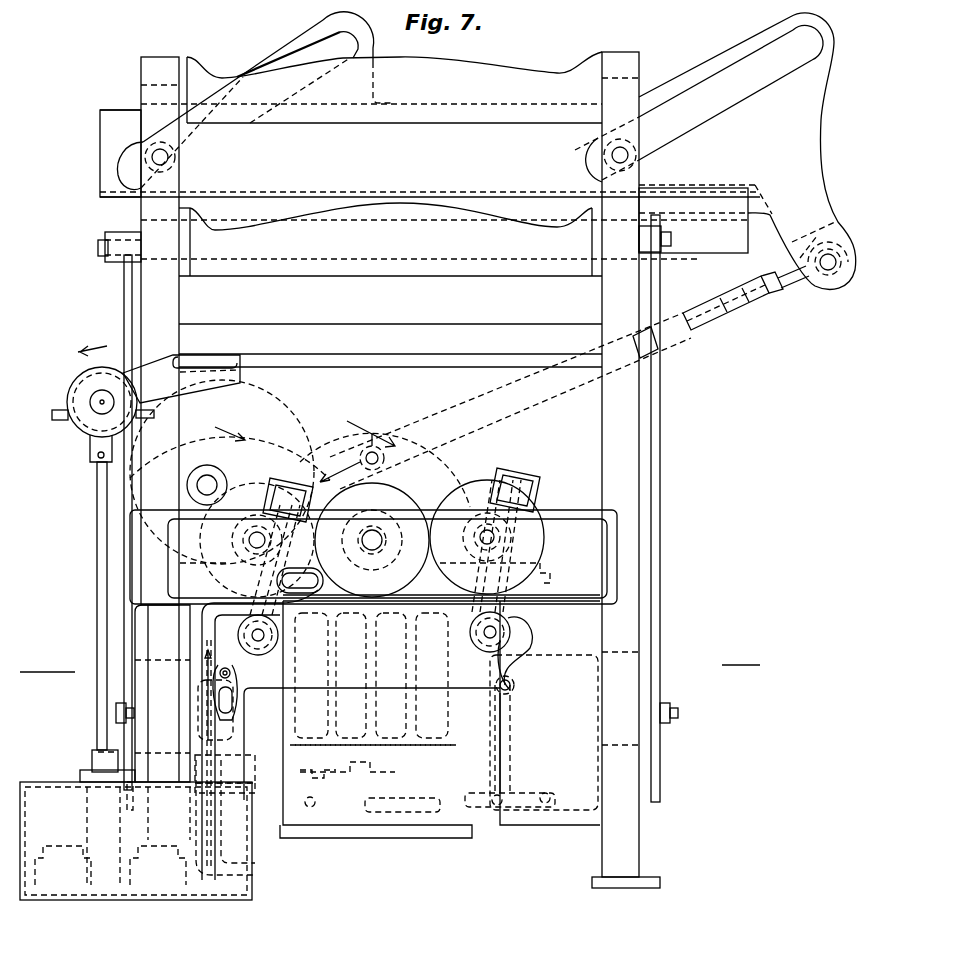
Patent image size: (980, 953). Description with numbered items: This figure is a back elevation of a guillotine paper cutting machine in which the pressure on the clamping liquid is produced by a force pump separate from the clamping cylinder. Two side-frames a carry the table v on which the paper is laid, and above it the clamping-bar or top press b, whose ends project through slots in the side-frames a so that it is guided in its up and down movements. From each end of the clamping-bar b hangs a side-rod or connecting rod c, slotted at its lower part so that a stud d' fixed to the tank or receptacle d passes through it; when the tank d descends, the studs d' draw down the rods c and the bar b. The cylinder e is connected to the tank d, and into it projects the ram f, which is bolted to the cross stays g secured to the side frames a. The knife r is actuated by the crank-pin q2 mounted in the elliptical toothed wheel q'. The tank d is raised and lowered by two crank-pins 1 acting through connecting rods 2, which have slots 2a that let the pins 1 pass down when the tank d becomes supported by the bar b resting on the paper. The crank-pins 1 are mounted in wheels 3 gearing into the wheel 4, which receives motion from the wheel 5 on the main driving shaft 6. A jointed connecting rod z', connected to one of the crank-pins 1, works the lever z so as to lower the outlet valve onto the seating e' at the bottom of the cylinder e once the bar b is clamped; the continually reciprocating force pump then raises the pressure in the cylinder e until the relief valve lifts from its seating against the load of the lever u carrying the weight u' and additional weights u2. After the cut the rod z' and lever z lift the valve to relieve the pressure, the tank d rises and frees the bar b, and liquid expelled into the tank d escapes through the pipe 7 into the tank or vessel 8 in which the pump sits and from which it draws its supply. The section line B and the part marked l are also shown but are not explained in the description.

The side-frames a is at (430, 470).
The clamping-bar or top press b is at (445, 239).
The side-rod or connecting rod c is at (375, 508).
The knife r is at (425, 186).
The table v is at (362, 363).
The cross stays g is at (373, 541).
The crank-pins 1 is at (299, 262).
The connecting rods 2 is at (539, 323).
The wheels 3 is at (490, 498).
The wheel 4 is at (385, 509).
The slots 2a is at (400, 567).
The wheel 5 is at (248, 478).
The main driving shaft 6 is at (207, 485).
The pipe 7 is at (227, 695).
The tank or vessel 8 is at (136, 841).
The elliptical toothed wheel q' is at (299, 451).
The crank-pin q2 is at (380, 422).
The ram f is at (259, 724).
The tank or receptacle d is at (422, 716).
The stud d' is at (388, 712).
The lever z is at (483, 751).
The jointed connecting rod z' is at (523, 681).
The lever u is at (238, 792).
The weight u' is at (245, 770).
The weight or weights u2 is at (241, 715).
The cylinder e is at (383, 750).
The seating e' is at (334, 767).
The pin l is at (325, 800).
The section line B is at (397, 662).